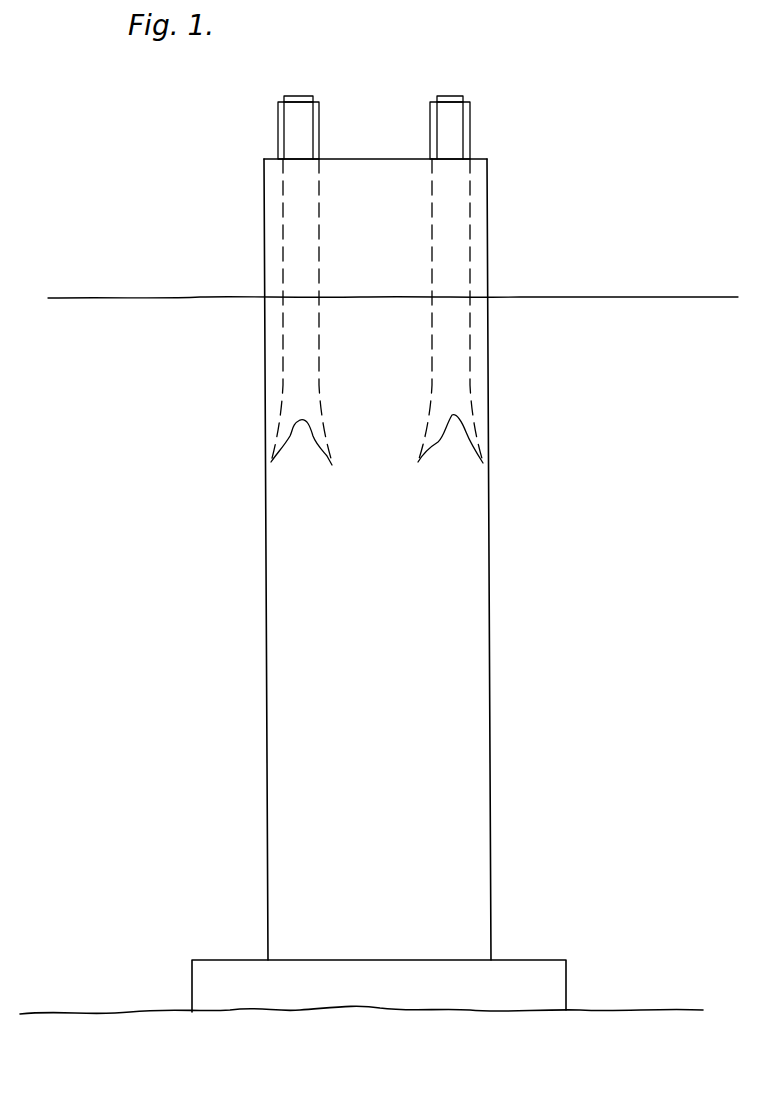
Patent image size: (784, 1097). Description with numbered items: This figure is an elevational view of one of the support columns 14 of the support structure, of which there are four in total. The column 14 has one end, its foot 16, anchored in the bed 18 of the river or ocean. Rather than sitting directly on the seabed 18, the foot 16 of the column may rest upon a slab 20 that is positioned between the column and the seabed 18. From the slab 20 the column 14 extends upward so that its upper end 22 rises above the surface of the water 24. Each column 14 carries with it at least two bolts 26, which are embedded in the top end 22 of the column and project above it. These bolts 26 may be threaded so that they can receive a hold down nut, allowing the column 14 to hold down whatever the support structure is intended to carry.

The column 14 is at (427, 528).
The foot 16 is at (492, 898).
The bed 18 is at (630, 1022).
The slab 20 is at (566, 970).
The upper end 22 is at (489, 225).
The water 24 is at (550, 296).
The bolts 26 is at (432, 132).